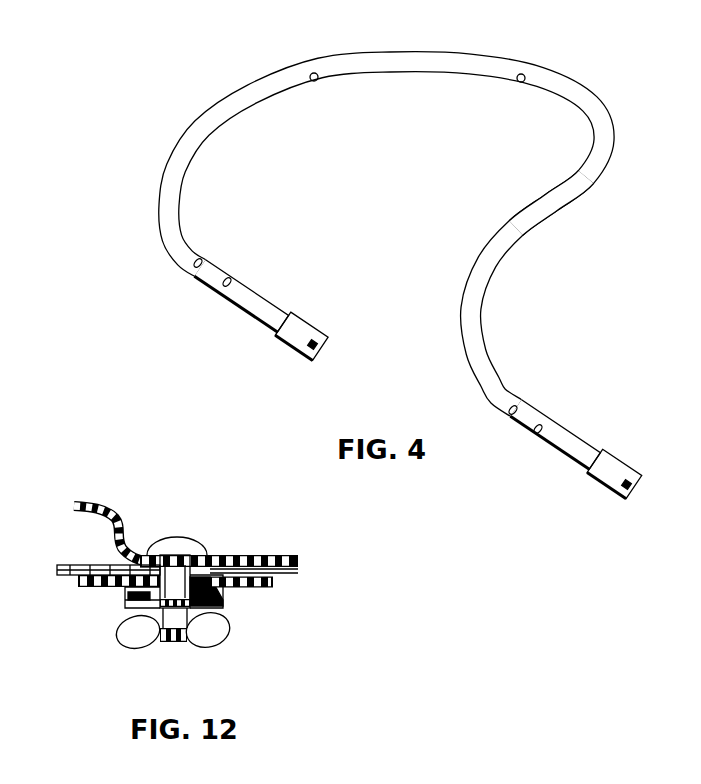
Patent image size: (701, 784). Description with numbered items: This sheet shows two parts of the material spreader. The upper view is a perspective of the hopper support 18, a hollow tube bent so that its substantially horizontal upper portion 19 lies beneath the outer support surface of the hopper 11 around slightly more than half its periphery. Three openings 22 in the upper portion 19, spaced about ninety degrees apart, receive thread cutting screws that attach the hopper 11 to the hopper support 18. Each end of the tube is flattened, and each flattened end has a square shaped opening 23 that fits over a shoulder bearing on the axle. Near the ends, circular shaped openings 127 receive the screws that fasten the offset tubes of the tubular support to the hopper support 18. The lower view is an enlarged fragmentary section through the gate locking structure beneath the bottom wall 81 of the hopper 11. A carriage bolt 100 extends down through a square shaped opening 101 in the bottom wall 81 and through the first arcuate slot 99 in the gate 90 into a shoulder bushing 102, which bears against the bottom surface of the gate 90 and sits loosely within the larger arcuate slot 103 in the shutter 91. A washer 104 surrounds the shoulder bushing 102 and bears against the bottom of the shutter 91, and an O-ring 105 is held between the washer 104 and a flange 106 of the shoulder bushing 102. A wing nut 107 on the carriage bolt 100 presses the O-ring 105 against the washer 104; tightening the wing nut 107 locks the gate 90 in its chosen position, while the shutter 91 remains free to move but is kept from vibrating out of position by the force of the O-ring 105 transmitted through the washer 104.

In FIG. 4, the hopper support 18 is at (553, 218).
In FIG. 4, the upper portion 19 is at (613, 143).
In FIG. 4, the openings / flattened ends 22 is at (316, 81).
In FIG. 4, the square shaped opening 23 is at (323, 352).
In FIG. 4, the circular shaped openings 127 is at (202, 272).
In FIG. 12, the hopper 11 is at (88, 499).
In FIG. 12, the bottom wall 81 is at (278, 553).
In FIG. 12, the gate 90 is at (76, 565).
In FIG. 12, the shutter 91 is at (72, 579).
In FIG. 12, the first arcuate slot 99 is at (181, 565).
In FIG. 12, the carriage bolt 100 is at (206, 548).
In FIG. 12, the square shaped opening 101 is at (166, 566).
In FIG. 12, the shoulder bushing 102 is at (220, 610).
In FIG. 12, the arcuate slot 103 is at (215, 582).
In FIG. 12, the washer 104 is at (267, 590).
In FIG. 12, the O-ring 105 is at (127, 592).
In FIG. 12, the flange 106 is at (123, 603).
In FIG. 12, the wing nut 107 is at (222, 653).